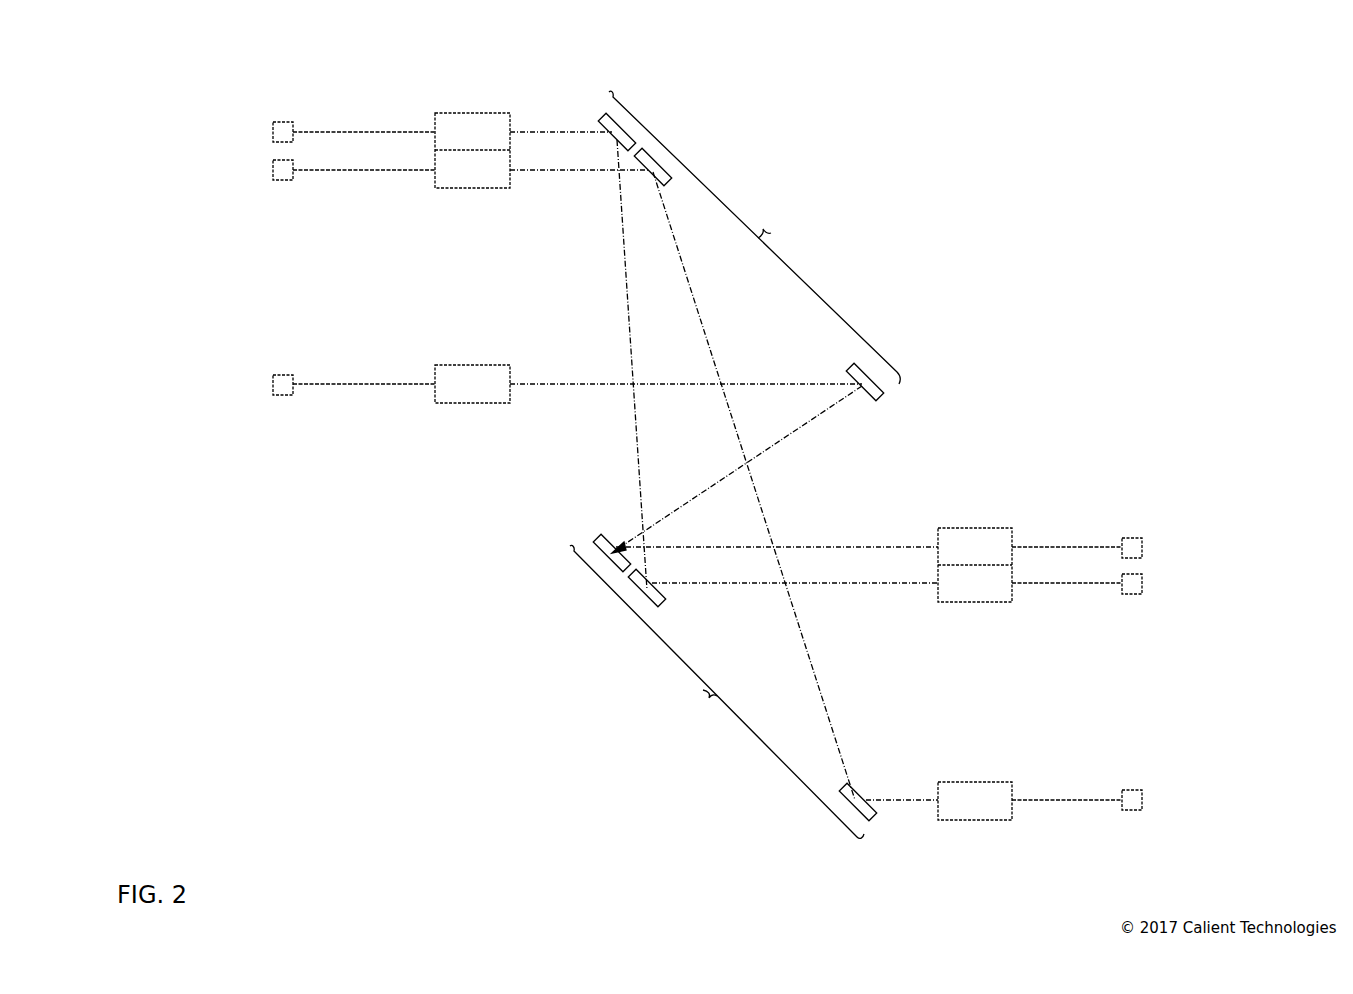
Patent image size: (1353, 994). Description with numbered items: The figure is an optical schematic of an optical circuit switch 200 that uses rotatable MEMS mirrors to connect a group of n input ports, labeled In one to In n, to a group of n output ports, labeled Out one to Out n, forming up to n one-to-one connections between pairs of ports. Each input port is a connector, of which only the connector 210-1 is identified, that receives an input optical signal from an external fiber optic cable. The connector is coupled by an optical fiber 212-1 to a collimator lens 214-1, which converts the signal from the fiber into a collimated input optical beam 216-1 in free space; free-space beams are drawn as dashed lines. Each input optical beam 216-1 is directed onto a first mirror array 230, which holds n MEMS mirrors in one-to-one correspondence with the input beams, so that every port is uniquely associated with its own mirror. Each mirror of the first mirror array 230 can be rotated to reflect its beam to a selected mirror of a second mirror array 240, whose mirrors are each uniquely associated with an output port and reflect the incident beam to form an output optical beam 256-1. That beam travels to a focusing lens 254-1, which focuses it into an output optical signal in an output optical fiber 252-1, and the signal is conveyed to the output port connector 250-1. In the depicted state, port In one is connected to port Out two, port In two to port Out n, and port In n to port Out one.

The optical circuit switch 200 is at (1173, 61).
The connector 210-1 is at (285, 122).
The optical fiber 212-1 is at (328, 132).
The collimator lens 214-1 is at (460, 113).
The input optical beam 216-1 is at (565, 132).
The first mirror array 230 is at (754, 246).
The second mirror array 240 is at (723, 691).
The connector 250-1 is at (1132, 537).
The output optical fiber 252-1 is at (1065, 547).
The focusing lens 254-1 is at (975, 528).
The output optical beam 256-1 is at (902, 545).